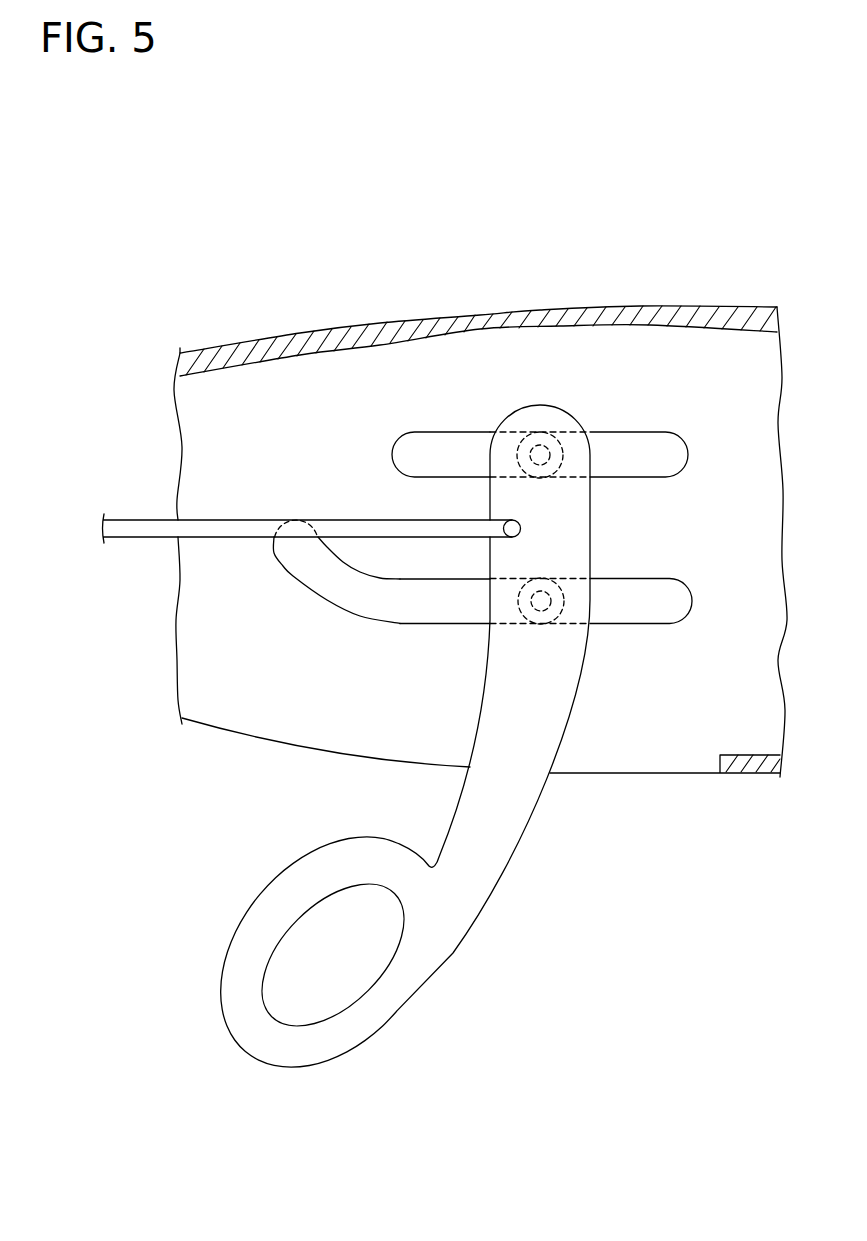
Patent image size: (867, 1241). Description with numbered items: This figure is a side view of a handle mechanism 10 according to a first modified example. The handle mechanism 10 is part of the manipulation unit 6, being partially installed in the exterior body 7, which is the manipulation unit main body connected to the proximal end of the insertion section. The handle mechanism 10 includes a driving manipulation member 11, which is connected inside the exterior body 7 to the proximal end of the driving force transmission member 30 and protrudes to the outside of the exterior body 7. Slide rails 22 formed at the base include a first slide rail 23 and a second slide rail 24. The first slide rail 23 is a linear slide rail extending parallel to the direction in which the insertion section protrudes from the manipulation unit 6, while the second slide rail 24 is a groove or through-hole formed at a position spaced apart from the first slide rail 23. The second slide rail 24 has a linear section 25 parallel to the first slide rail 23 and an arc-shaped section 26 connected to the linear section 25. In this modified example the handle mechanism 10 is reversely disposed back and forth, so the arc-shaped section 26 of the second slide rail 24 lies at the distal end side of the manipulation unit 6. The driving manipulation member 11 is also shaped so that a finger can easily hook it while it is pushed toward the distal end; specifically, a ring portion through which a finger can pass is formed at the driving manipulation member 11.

The manipulation unit 6 is at (629, 300).
The exterior body 7 is at (510, 318).
The handle mechanism 10 is at (649, 393).
The driving manipulation member 11 is at (432, 943).
The slide rails 22 is at (473, 388).
The first slide rail 23 is at (447, 450).
The second slide rail 24 is at (473, 411).
The linear section 25 is at (457, 597).
The arc-shaped section 26 is at (317, 562).
The driving force transmission member 30 is at (230, 528).